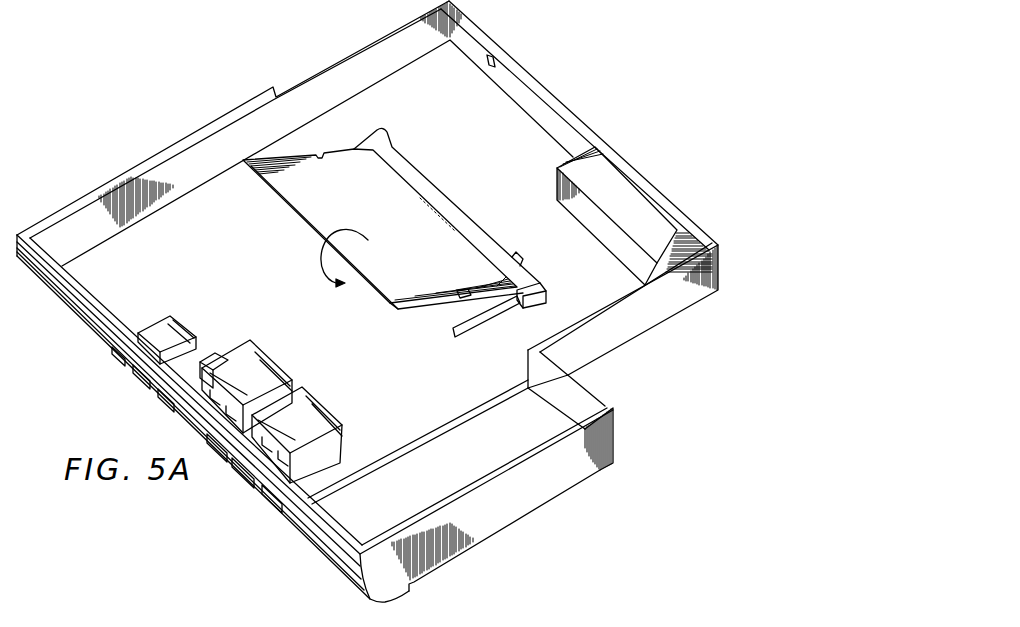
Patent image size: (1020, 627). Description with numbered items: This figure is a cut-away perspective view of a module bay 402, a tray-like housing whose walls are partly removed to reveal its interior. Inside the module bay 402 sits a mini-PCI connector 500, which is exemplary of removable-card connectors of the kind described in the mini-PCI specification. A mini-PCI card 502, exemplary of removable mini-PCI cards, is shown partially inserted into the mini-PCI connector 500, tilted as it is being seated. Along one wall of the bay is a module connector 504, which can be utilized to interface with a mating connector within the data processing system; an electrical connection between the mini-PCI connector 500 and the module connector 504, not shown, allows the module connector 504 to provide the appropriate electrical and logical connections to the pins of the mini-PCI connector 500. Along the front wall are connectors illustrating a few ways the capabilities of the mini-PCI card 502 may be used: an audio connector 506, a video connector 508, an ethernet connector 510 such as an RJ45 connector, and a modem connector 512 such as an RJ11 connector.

The module bay 402 is at (628, 330).
The mini-PCI connector 500 is at (497, 265).
The mini-PCI card 502 is at (304, 198).
The module connector 504 is at (642, 211).
The audio connector 506 is at (160, 330).
The video connector 508 is at (204, 357).
The ethernet connector 510 is at (259, 360).
The modem connector 512 is at (310, 407).